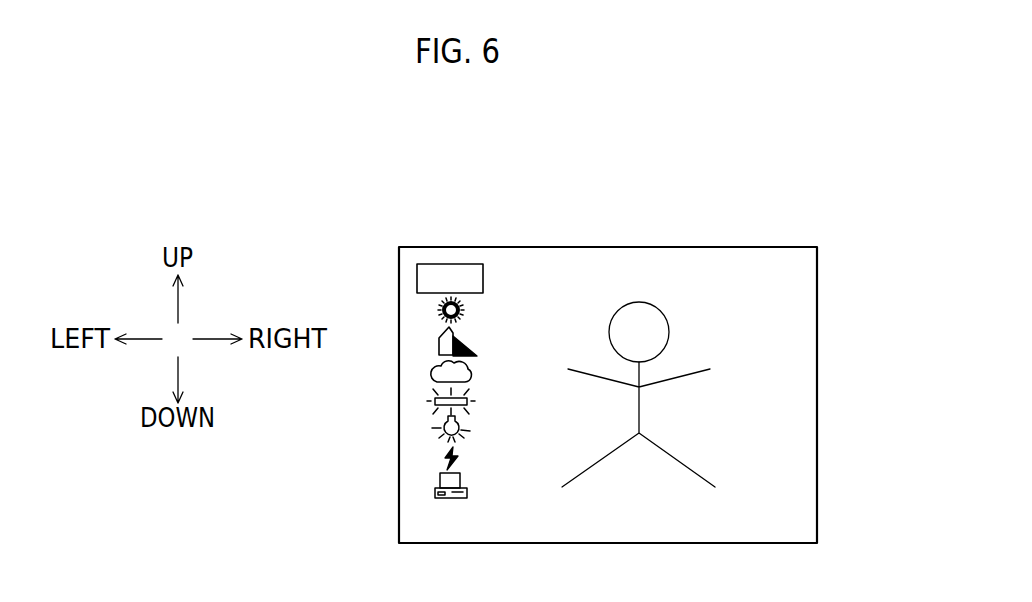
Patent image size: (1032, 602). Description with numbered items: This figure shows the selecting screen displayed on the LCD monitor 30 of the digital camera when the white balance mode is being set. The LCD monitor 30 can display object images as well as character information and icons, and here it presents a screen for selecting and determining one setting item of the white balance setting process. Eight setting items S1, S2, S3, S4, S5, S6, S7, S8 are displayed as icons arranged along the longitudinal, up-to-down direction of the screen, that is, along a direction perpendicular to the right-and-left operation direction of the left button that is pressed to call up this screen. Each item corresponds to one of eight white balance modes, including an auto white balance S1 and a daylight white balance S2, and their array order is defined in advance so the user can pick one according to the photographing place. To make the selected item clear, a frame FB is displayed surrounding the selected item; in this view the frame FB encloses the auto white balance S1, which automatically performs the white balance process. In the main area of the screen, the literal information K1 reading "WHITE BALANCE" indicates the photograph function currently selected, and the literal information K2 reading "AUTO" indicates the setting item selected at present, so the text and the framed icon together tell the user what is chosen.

The LCD monitor 30 is at (793, 203).
The frame FB is at (455, 264).
The auto white balance S1 is at (417, 276).
The daylight white balance S2 is at (441, 311).
The setting item S3 is at (439, 345).
The setting item S4 is at (432, 374).
The setting item S5 is at (433, 401).
The setting item S6 is at (433, 428).
The setting item S7 is at (445, 460).
The setting item S8 is at (435, 493).
The literal information K1 is at (745, 393).
The literal information K2 is at (678, 421).